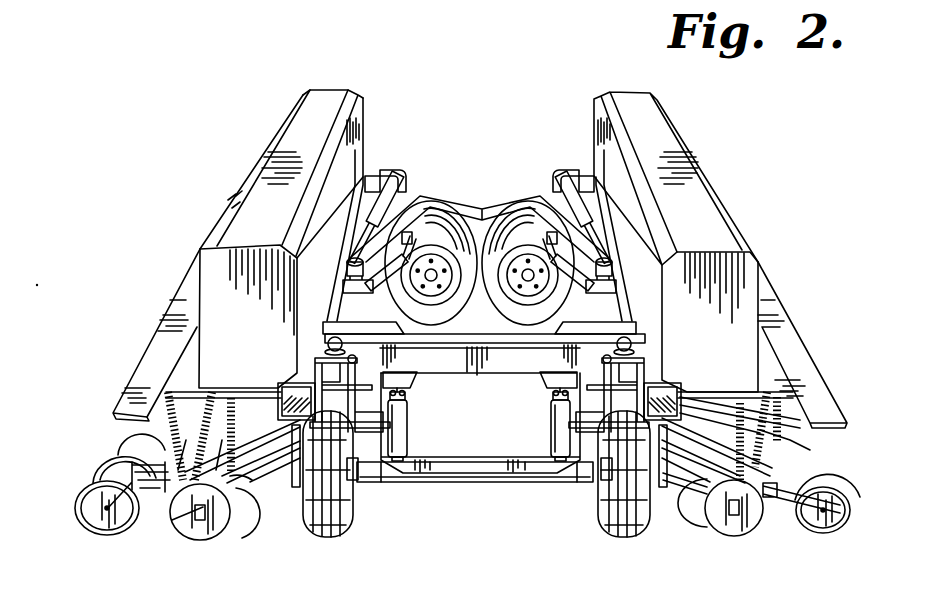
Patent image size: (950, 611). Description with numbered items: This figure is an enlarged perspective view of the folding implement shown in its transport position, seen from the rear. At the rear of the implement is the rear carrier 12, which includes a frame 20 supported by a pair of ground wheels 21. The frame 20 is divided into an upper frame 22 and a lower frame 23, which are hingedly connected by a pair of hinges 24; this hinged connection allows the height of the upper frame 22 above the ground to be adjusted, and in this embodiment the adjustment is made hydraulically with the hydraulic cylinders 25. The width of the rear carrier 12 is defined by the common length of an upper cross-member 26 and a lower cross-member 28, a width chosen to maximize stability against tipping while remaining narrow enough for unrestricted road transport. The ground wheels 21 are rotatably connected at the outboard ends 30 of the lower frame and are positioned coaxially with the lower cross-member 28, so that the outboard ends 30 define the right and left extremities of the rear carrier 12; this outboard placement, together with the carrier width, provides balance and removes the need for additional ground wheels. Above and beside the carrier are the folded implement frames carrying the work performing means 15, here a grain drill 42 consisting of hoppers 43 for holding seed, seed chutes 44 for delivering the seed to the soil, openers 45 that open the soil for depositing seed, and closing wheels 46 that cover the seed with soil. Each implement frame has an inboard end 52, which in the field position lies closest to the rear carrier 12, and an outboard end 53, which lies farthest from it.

The rear carrier 12 is at (478, 478).
The work performing means 15 is at (160, 328).
The frame 20 is at (452, 315).
The ground wheels 21 is at (350, 515).
The upper frame 22 is at (460, 375).
The lower frame 23 is at (448, 458).
The hinges 24 is at (392, 425).
The hydraulic cylinders 25 is at (408, 405).
The upper cross-member 26 is at (494, 315).
The lower cross-member 28 is at (425, 480).
The outboard ends 30 is at (360, 480).
The grain drill 42 is at (140, 358).
The hoppers 43 is at (290, 112).
The seed chutes 44 is at (172, 520).
The openers 45 is at (245, 522).
The closing wheels 46 is at (110, 538).
The inboard end 52 is at (217, 275).
The outboard end 53 is at (323, 90).